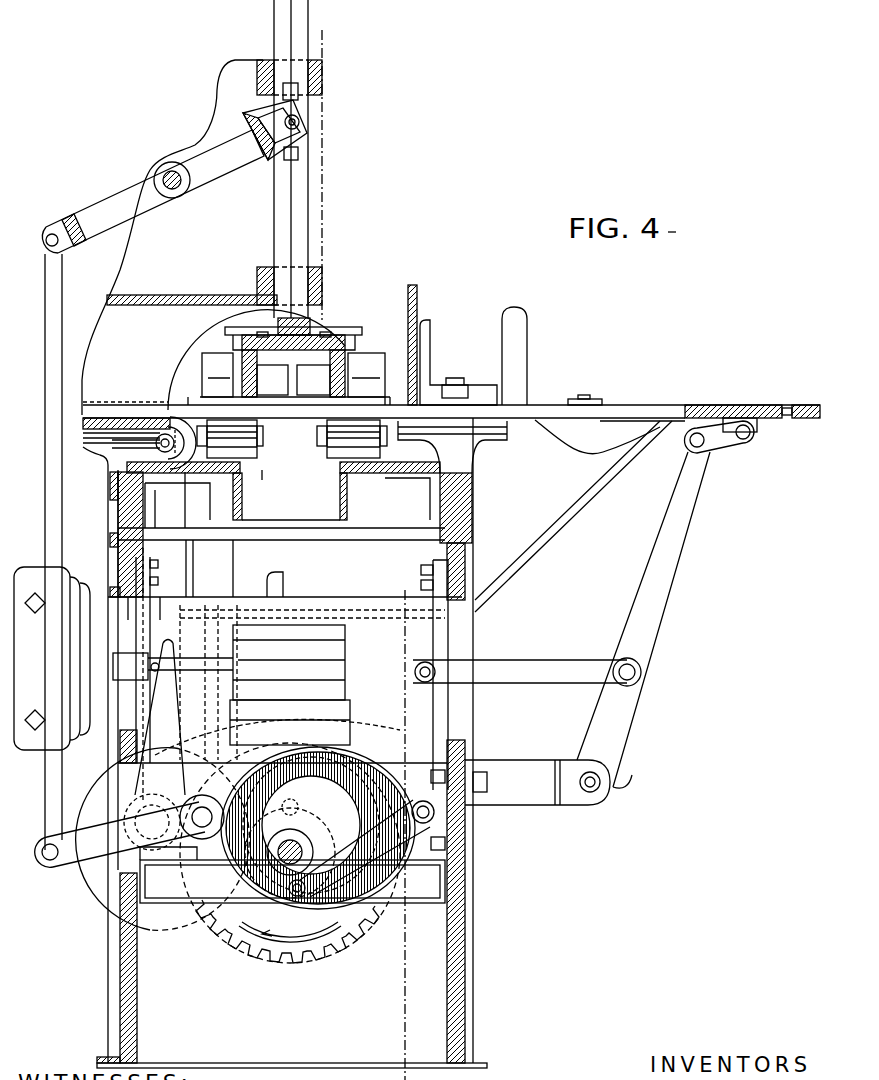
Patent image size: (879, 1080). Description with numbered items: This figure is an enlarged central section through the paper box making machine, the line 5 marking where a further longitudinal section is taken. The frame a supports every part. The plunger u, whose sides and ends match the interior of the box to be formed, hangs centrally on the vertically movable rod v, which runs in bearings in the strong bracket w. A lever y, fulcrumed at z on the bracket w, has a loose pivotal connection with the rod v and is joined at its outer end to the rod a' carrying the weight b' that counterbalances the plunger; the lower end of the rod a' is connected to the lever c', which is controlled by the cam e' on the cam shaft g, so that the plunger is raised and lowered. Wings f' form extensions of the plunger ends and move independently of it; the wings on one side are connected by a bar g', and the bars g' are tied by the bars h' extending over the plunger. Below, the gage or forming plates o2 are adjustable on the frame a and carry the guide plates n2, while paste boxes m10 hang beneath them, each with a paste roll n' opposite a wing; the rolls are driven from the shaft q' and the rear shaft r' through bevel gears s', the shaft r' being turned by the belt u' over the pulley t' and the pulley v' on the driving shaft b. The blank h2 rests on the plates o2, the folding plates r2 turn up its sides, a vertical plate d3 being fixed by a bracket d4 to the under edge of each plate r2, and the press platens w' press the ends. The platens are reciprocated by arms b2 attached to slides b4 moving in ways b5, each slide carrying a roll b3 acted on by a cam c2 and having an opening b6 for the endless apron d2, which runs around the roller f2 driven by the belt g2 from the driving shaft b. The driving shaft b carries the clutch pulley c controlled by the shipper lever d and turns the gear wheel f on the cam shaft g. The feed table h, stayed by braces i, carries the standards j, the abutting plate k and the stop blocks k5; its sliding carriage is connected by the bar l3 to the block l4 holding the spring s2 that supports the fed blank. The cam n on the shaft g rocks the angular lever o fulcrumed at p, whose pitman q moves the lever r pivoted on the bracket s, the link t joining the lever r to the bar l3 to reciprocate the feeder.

The section line 5 is at (323, 161).
The vertically movable rod v is at (303, 167).
The bracket w is at (213, 237).
The lever y is at (115, 205).
The fulcrum z is at (168, 170).
The rod a' is at (41, 542).
The frame a is at (421, 736).
The bars h' is at (297, 326).
The bar g' is at (298, 363).
The wings f' is at (293, 375).
The plunger u is at (293, 380).
The plates n2 is at (394, 385).
The gage or forming plates o2 is at (200, 412).
The blank h2 is at (205, 395).
The pulley t' is at (172, 423).
The shaft r' is at (116, 455).
The bevel gears s' is at (116, 472).
The paste roll n' is at (292, 439).
The paste boxes m10 is at (293, 452).
The shaft q' is at (260, 468).
The folding plates r2 is at (240, 478).
The press platens w' is at (285, 487).
The bracket d4 is at (233, 505).
The vertical plate d3 is at (233, 538).
The belt u' is at (159, 674).
The lever or arm b2 is at (285, 560).
The ways b5 is at (193, 670).
The slide b4 is at (312, 670).
The roller f2 is at (289, 662).
The endless apron d2 is at (330, 705).
The rectangular opening b6 is at (277, 737).
The belt g2 is at (168, 740).
The pitman q is at (394, 691).
The clutch pulley c is at (163, 839).
The cam n is at (290, 853).
The cam e' is at (256, 936).
The gear wheel f is at (318, 870).
The roll b3 is at (300, 892).
The cams c2 is at (349, 970).
The cam shaft g is at (257, 928).
The fulcrum p is at (434, 815).
The driving shaft b is at (129, 831).
The lever c' is at (67, 849).
The pulley v' is at (135, 813).
The shipper lever d is at (292, 875).
The angular lever o is at (426, 820).
The bracket s is at (537, 782).
The lever r is at (643, 620).
The braces i is at (565, 528).
The link t is at (721, 445).
The bar l3 is at (751, 433).
The block l4 is at (735, 405).
The feed table h is at (801, 400).
The blocks k5 is at (598, 397).
The spring s2 is at (597, 439).
The abutting plate k is at (418, 297).
The guards or standards j is at (520, 352).
The weight b' is at (52, 658).